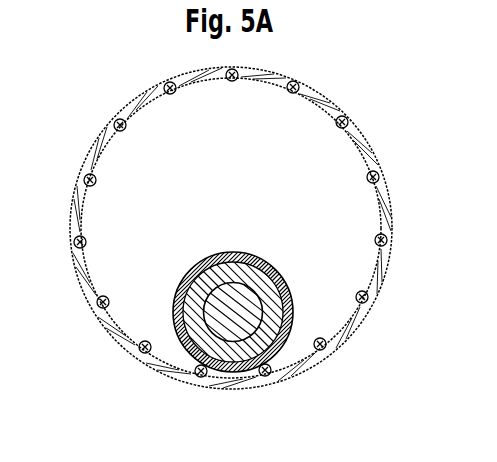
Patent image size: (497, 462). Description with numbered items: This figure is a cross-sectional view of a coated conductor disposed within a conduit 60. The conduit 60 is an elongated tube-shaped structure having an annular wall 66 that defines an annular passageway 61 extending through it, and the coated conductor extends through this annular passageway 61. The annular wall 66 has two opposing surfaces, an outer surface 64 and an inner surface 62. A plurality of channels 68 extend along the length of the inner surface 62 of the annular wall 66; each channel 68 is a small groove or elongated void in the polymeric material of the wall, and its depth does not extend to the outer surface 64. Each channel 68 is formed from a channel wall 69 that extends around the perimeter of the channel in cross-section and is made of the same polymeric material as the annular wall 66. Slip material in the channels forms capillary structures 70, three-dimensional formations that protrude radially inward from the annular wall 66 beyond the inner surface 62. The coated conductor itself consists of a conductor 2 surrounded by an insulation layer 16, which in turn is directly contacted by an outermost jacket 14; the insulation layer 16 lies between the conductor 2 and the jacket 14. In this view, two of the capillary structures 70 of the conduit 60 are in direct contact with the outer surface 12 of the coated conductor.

The conductor 2 is at (267, 328).
The outer surface 12 is at (293, 313).
The jacket 14 is at (190, 345).
The insulation layer 16 is at (225, 377).
The conduit 60 is at (231, 228).
The annular passageway 61 is at (246, 218).
The inner surface 62 is at (138, 110).
The outer surface 64 is at (318, 99).
The annular wall 66 is at (367, 143).
The channel 68 is at (143, 352).
The channel wall 69 is at (93, 147).
The capillary structure 70 is at (381, 177).